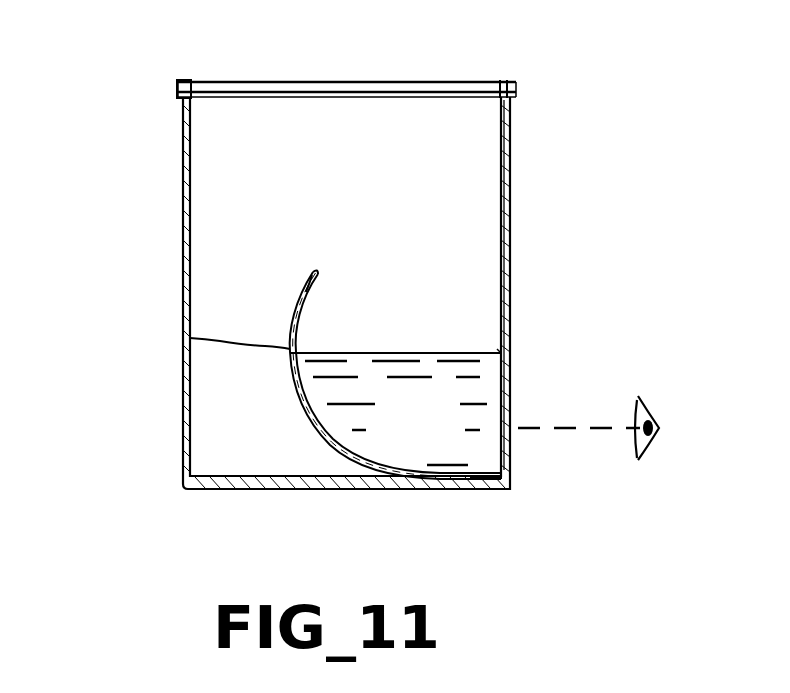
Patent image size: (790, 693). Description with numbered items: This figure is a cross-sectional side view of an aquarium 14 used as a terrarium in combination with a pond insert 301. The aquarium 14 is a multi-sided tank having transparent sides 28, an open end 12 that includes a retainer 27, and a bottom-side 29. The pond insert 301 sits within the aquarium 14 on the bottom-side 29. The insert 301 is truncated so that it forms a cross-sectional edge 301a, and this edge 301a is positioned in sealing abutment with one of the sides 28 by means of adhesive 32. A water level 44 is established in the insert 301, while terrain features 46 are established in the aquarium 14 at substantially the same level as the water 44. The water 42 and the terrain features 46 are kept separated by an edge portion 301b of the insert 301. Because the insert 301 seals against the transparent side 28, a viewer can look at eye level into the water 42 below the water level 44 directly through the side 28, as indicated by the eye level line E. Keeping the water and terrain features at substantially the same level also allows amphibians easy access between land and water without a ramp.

The open end 12 is at (513, 82).
The aquarium 14 is at (511, 170).
The retainer 27 is at (178, 85).
The transparent sides 28 is at (511, 268).
The bottom-side 29 is at (445, 490).
The adhesive 32 is at (498, 365).
The water 42 is at (437, 429).
The water level 44 is at (338, 352).
The terrain features 46 is at (225, 338).
The pond insert 301 is at (322, 430).
The cross-sectional edge 301a is at (508, 385).
The edge portion 301b is at (308, 270).
The eye level line E is at (568, 430).